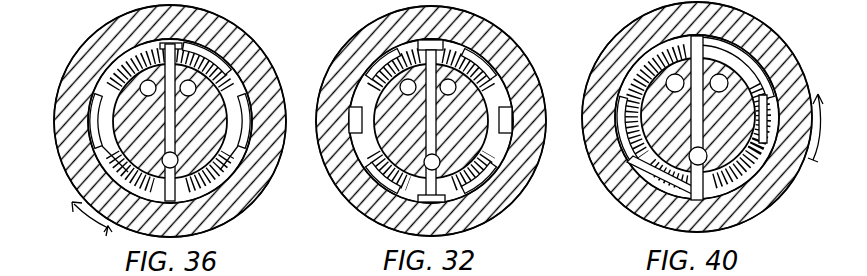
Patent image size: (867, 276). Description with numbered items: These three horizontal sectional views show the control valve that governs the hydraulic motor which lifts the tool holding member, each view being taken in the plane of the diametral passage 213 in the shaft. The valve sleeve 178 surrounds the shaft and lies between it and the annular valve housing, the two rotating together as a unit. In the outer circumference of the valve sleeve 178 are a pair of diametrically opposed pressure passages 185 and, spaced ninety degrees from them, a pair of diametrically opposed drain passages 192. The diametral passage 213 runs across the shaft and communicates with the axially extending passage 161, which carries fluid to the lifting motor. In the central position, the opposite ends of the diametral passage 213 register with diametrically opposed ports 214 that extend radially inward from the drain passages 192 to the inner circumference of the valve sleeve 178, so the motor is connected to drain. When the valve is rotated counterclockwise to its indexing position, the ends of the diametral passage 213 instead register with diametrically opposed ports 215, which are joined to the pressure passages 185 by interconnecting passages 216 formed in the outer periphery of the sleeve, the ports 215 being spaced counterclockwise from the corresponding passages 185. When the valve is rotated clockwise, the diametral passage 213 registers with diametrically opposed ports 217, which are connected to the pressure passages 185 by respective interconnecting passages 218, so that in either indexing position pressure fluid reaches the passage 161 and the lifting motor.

In FIG. 32, the axially extending passage 161 is at (440, 166).
In FIG. 36, the valve sleeve 178 is at (233, 55).
In FIG. 32, the valve sleeve 178 is at (378, 179).
In FIG. 36, the pressure passages 185 is at (96, 78).
In FIG. 32, the pressure passages 185 is at (381, 158).
In FIG. 40, the pressure passages 185 is at (770, 71).
In FIG. 32, the drain passages 192 is at (478, 18).
In FIG. 32, the diametral passage 213 is at (466, 72).
In FIG. 32, the ports 214 is at (426, 56).
In FIG. 40, the ports 215 is at (674, 35).
In FIG. 40, the interconnecting passages 216 is at (809, 80).
In FIG. 36, the ports 217 is at (198, 34).
In FIG. 36, the interconnecting passages 218 is at (134, 56).